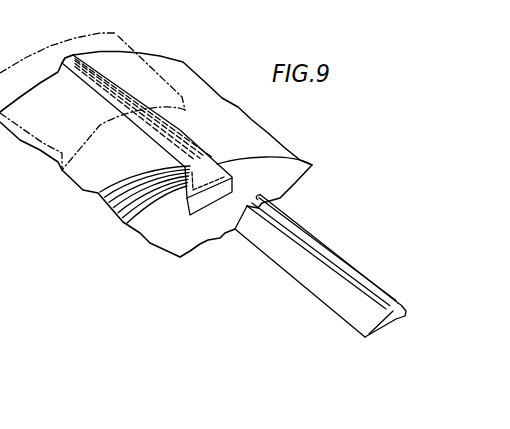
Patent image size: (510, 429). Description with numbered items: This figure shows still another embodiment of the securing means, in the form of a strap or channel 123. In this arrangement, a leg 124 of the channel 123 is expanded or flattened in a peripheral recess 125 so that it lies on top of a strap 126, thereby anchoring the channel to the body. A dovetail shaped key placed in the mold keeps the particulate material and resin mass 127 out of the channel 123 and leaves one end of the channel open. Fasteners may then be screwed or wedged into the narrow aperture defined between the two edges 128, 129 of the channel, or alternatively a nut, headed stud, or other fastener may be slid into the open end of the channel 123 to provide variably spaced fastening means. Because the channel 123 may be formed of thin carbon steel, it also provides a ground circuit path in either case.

The channel 123 is at (234, 215).
The leg 124 is at (388, 324).
The peripheral recess 125 is at (222, 173).
The strap 126 is at (207, 205).
The particulate material and resin mass 127 is at (120, 36).
The edge 128 is at (183, 137).
The edge 129 is at (210, 152).